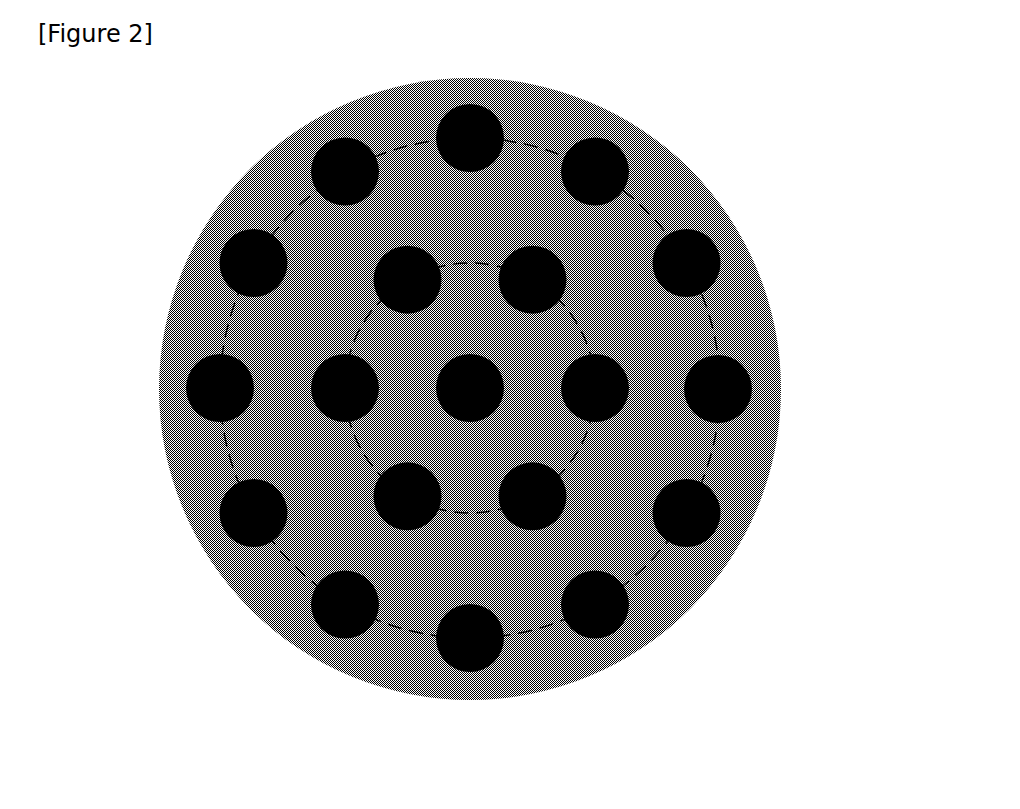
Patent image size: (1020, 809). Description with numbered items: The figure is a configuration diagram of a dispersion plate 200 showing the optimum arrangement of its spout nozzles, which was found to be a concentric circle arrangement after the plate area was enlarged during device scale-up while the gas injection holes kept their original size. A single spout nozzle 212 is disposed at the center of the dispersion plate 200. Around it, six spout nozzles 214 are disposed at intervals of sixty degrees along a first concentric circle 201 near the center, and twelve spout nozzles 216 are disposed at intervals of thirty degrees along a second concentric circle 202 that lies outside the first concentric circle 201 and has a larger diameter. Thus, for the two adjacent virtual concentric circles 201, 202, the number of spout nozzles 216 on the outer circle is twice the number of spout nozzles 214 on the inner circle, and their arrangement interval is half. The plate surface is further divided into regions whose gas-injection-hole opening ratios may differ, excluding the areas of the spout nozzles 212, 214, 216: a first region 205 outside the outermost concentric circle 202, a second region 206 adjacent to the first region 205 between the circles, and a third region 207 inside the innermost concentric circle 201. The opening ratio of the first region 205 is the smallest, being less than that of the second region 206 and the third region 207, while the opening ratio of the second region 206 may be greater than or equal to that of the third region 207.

The dispersion plate 200 is at (470, 417).
The first concentric circle 201 is at (360, 335).
The second concentric circle 202 is at (288, 217).
The first region 205 is at (540, 667).
The second region 206 is at (410, 583).
The third region 207 is at (400, 428).
The spout nozzle 212 is at (500, 410).
The spout nozzles 214 is at (617, 413).
The spout nozzles 216 is at (745, 407).